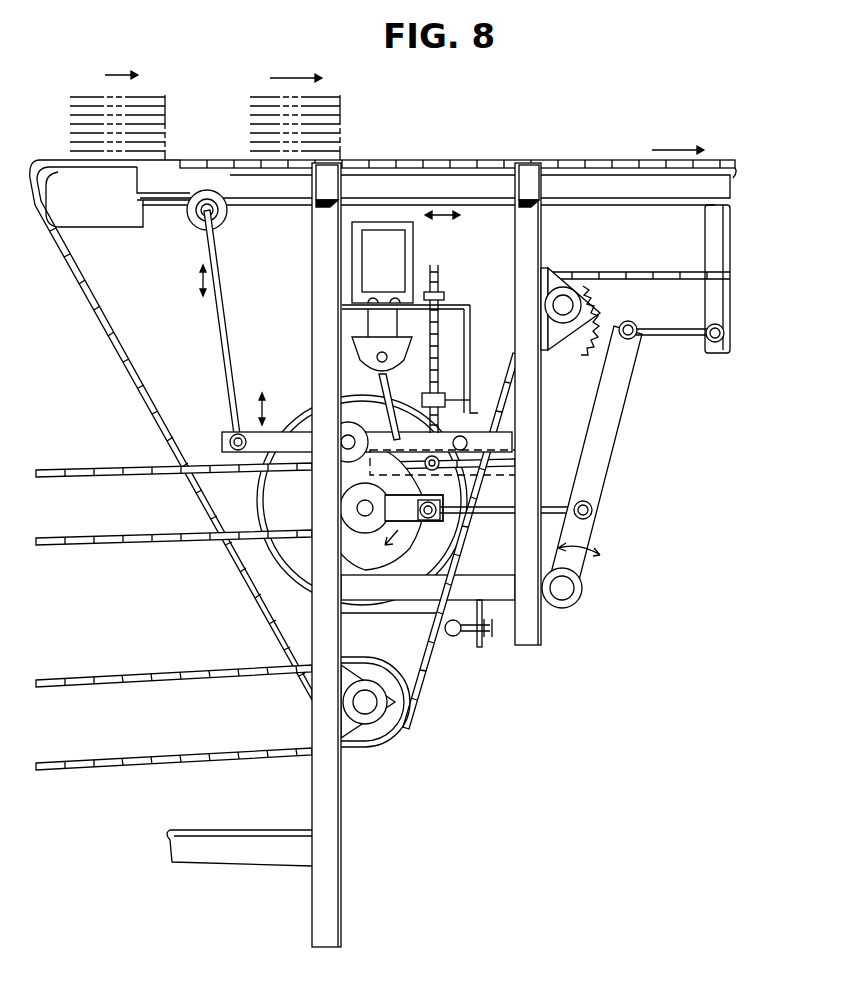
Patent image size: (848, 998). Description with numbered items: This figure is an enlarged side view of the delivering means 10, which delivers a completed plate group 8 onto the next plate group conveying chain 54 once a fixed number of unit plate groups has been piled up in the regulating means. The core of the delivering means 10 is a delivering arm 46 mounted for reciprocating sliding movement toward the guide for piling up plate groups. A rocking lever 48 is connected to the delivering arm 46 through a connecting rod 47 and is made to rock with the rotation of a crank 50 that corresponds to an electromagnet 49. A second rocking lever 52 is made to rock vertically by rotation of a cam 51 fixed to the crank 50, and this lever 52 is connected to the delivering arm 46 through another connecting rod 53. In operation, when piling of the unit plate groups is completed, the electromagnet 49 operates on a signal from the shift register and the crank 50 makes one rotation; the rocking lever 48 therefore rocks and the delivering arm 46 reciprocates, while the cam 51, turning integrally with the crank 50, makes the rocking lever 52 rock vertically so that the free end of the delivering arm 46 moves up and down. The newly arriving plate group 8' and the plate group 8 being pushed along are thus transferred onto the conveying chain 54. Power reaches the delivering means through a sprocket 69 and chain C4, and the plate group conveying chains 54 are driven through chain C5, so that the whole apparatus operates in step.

The stack of sheets (incoming) 8' is at (129, 107).
The plate group 8 is at (313, 117).
The delivering arm 46 is at (58, 158).
The delivering means 10 is at (192, 182).
The plate group conveying chain 54 is at (456, 160).
The electromagnet 49 is at (406, 258).
The connecting rod 53 is at (219, 282).
The rocking lever 52 is at (276, 432).
The connecting rod 47 is at (666, 340).
The rocking lever 48 is at (606, 452).
The sprocket 69 is at (358, 508).
The crank 50 is at (412, 513).
The cam 51 is at (390, 555).
The chain C4 is at (190, 547).
The chain C5 is at (205, 762).